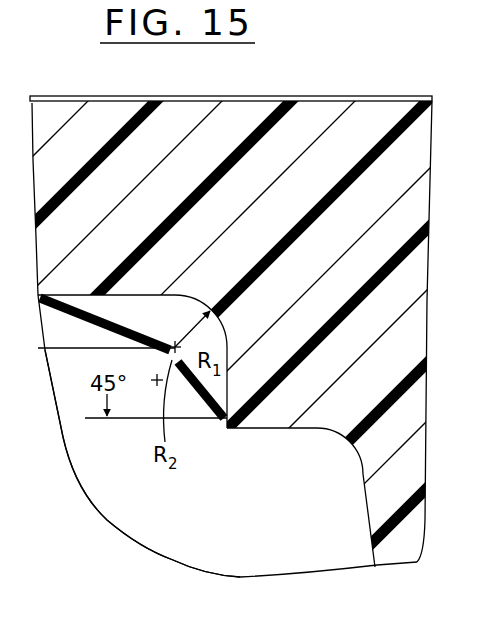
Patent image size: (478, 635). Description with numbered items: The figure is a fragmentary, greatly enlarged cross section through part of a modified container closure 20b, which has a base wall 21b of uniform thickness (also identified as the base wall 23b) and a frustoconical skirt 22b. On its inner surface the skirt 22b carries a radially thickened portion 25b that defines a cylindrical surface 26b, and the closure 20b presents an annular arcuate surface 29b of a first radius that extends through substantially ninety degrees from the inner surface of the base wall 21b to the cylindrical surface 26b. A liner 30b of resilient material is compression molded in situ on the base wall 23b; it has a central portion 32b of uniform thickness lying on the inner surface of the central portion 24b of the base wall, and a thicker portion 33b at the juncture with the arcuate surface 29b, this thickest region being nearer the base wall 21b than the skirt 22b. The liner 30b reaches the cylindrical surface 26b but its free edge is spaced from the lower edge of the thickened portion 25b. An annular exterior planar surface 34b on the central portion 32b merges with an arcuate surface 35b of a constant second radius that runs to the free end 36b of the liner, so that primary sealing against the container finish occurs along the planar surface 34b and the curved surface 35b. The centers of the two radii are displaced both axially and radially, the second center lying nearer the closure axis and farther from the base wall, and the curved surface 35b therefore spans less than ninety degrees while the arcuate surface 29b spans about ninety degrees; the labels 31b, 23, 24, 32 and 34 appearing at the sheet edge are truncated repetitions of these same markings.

The closure 20b is at (388, 90).
The base wall 21b is at (147, 96).
The frustoconical skirt 22b is at (402, 539).
The base wall 23b is at (83, 137).
The central portion 24b is at (68, 322).
The radially thickened portion 25b is at (280, 413).
The cylindrical surface 26b is at (218, 322).
The annular arcuate surface 29b is at (212, 300).
The liner 30b is at (119, 300).
The center line 31b is at (94, 294).
The central portion 32b is at (86, 341).
The thicker portion 33b is at (182, 303).
The annular exterior planar surface 34b is at (127, 418).
The arcuate surface 35b is at (176, 364).
The free end 36b is at (222, 412).
The body portion (cut-off label) 23 is at (239, 355).
The body portion (cut-off label) 24 is at (239, 355).
The body portion (cut-off label) 32 is at (257, 355).
The body portion (cut-off label) 34 is at (287, 355).